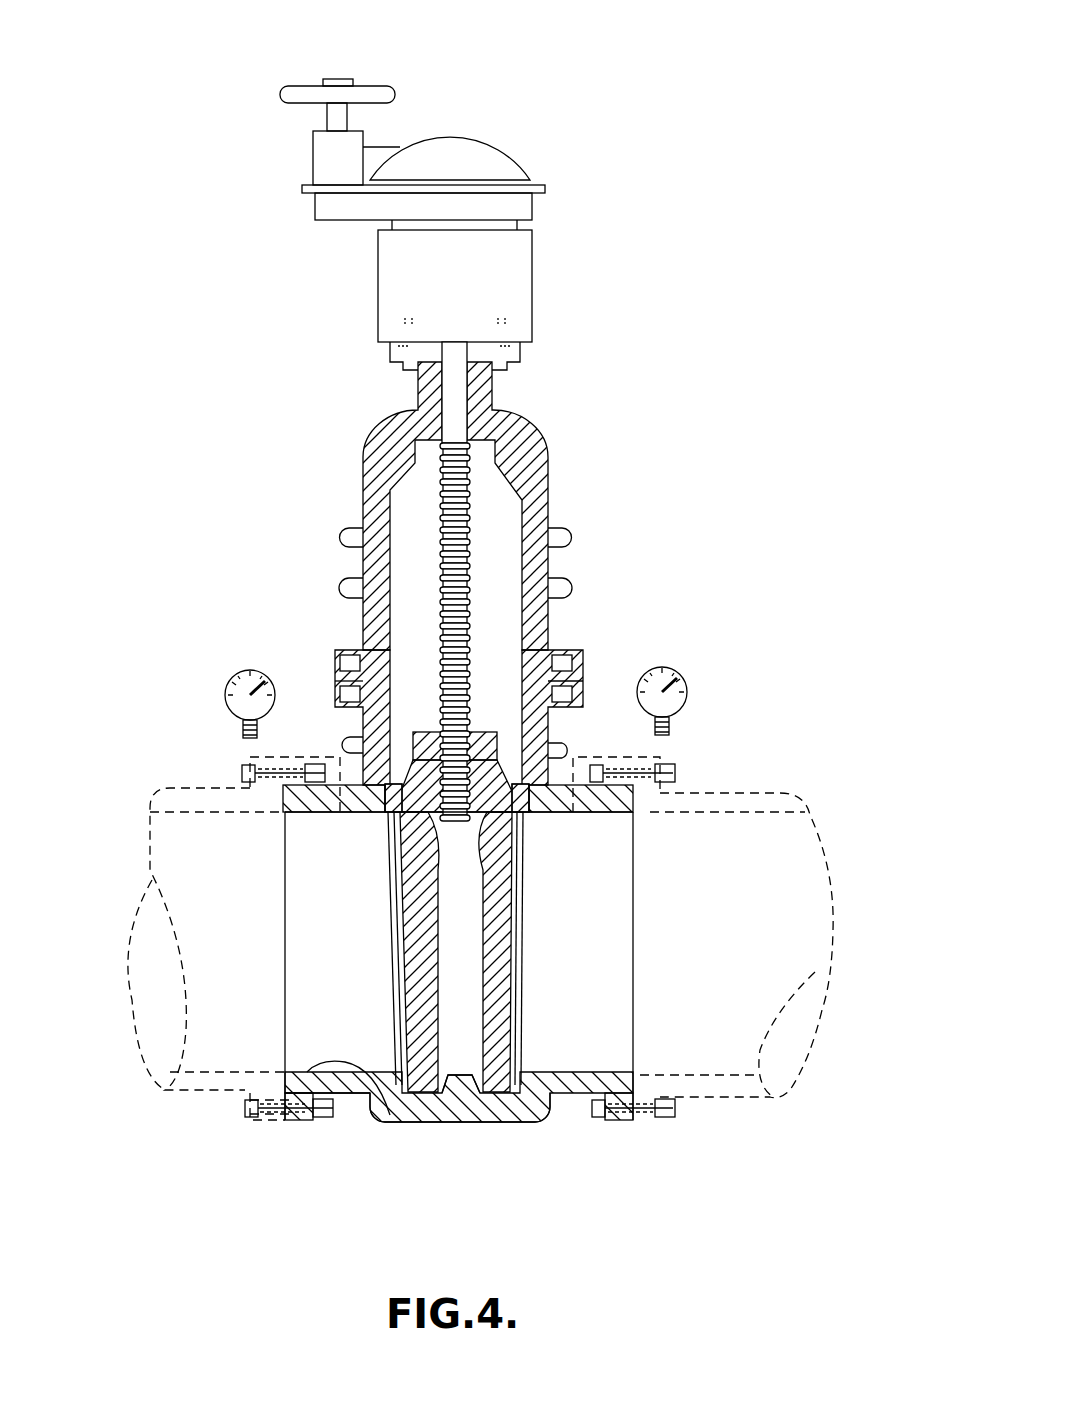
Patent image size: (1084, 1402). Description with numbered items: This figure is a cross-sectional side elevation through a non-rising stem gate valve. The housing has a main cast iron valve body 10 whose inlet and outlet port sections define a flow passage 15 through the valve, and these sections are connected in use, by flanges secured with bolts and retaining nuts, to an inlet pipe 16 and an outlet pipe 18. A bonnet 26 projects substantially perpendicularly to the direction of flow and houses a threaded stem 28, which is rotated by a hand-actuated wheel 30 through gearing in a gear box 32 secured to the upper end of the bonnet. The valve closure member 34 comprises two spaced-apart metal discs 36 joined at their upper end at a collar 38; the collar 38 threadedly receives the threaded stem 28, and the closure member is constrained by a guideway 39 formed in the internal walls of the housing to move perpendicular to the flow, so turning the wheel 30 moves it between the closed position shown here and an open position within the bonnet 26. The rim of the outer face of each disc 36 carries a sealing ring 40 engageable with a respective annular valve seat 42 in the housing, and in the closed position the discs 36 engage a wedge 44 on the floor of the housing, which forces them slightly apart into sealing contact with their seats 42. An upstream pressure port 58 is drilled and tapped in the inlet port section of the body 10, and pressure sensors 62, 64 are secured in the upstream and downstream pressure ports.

The valve body 10 is at (556, 1122).
The flow passage 15 is at (390, 1120).
The inlet pipe 16 is at (215, 1125).
The outlet pipe 18 is at (700, 1105).
The bonnet 26 is at (576, 573).
The threaded stem 28 is at (466, 508).
The hand-actuated wheel 30 is at (297, 86).
The gear box 32 is at (540, 318).
The valve closure member 34 is at (548, 966).
The metal discs 36 is at (415, 1033).
The collar 38 is at (425, 730).
The guideway 39 is at (456, 935).
The sealing ring 40 is at (407, 907).
The annular valve seat 42 is at (388, 800).
The wedge 44 is at (462, 1080).
The upstream pressure port 58 is at (333, 803).
The pressure sensor 62 is at (240, 670).
The pressure sensor 64 is at (652, 667).